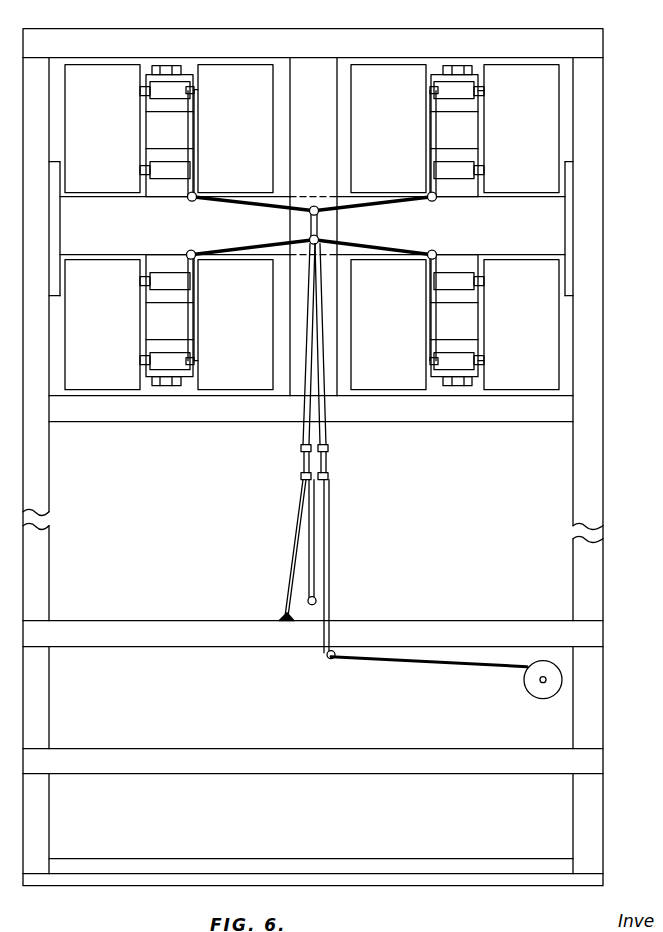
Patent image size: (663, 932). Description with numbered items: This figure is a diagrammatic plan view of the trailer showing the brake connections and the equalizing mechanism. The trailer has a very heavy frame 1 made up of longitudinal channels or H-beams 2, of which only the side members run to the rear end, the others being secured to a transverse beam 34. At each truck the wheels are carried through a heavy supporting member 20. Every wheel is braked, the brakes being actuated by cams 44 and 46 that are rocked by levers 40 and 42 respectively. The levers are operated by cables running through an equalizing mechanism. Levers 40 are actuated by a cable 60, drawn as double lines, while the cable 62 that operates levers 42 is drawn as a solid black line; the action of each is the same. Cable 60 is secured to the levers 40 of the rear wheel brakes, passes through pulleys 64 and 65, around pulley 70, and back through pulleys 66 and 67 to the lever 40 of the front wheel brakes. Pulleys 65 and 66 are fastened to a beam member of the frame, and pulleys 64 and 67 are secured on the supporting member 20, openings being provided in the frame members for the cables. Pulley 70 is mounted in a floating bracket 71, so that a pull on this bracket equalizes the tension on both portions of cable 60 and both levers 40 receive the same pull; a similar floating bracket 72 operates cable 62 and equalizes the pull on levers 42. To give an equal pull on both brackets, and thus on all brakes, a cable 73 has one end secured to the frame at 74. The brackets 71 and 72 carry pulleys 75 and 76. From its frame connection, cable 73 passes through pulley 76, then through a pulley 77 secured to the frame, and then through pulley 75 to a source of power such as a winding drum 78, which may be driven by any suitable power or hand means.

The frame 1 is at (49, 455).
The longitudinal channels or H-beams 2 is at (43, 581).
The supporting member 20 is at (155, 315).
The transverse beam 34 is at (436, 413).
The lever 40 is at (195, 95).
The lever 42 is at (433, 91).
The cam 44 is at (195, 91).
The cam 46 is at (480, 93).
The cable 60 is at (196, 133).
The cable 62 is at (300, 440).
The pulley 64 is at (197, 195).
The pulley 65 is at (314, 207).
The pulley 66 is at (319, 244).
The pulley 67 is at (196, 262).
The pulley 70 is at (327, 450).
The floating bracket 71 is at (327, 462).
The floating bracket 72 is at (305, 461).
The cable 73 is at (287, 580).
The point of connection 74 is at (282, 618).
The pulley 75 is at (329, 478).
The pulley 76 is at (302, 480).
The pulley 77 is at (317, 602).
The winding drum 78 is at (524, 683).